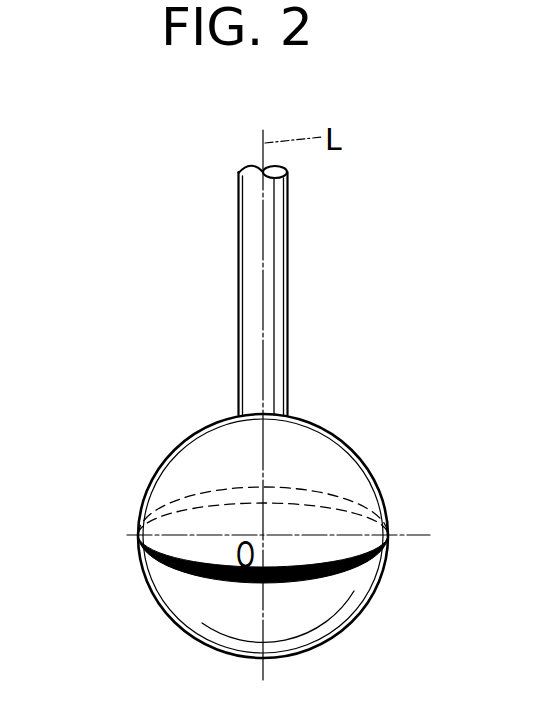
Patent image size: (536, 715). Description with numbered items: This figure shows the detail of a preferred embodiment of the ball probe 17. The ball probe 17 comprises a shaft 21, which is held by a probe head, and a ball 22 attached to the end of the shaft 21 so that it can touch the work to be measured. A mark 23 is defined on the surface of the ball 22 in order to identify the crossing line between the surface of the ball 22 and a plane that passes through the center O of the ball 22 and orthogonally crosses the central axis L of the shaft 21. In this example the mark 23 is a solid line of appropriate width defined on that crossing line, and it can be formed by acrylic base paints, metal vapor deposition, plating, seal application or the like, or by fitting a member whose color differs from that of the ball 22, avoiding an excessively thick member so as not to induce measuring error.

The ball probe 17 is at (150, 298).
The shaft 21 is at (279, 260).
The ball 22 is at (297, 418).
The mark 23 is at (170, 569).